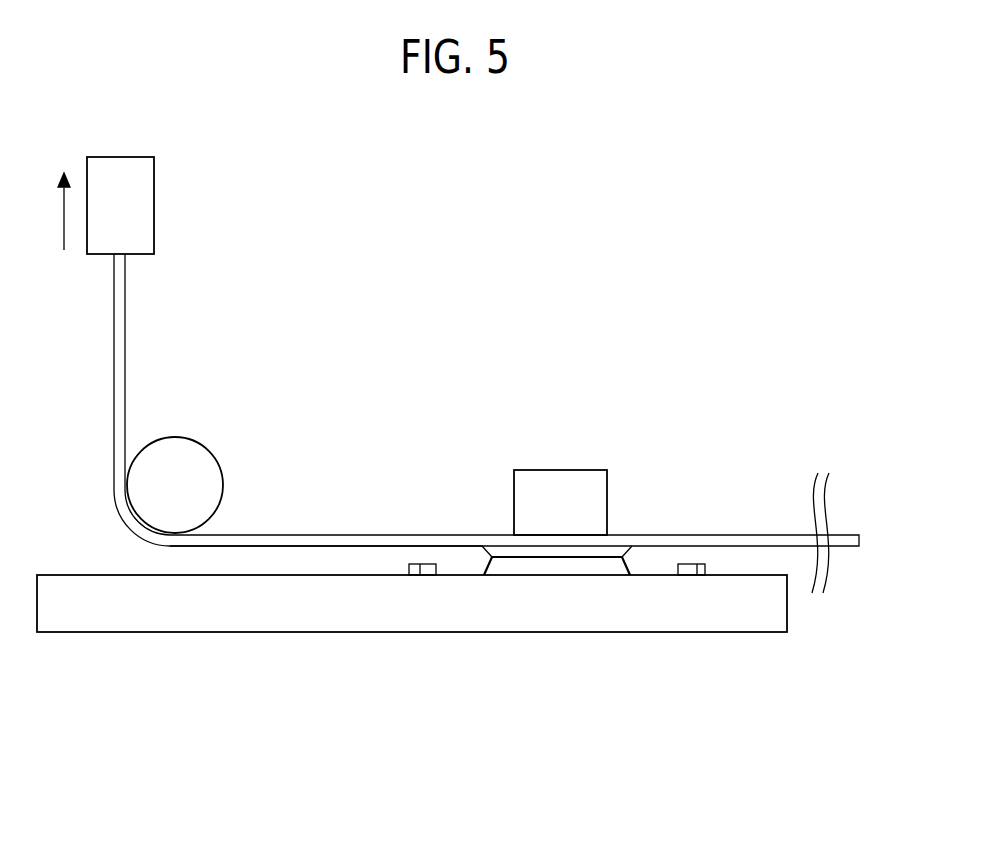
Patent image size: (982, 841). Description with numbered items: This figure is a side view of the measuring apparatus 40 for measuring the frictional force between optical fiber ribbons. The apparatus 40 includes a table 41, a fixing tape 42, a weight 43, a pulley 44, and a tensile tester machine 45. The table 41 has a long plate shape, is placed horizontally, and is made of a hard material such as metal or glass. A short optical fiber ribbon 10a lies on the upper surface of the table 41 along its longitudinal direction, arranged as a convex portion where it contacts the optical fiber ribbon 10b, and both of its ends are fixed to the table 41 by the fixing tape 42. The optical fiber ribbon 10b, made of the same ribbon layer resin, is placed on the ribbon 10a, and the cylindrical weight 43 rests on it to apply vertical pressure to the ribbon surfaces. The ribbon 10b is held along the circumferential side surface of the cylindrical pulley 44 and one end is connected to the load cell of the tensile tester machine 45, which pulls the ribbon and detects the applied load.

The measuring apparatus 40 is at (843, 146).
The table 41 is at (385, 632).
The fixing tape 42 is at (426, 576).
The optical fiber ribbon 10a is at (556, 558).
The optical fiber ribbon 10b is at (724, 535).
The weight 43 is at (558, 469).
The pulley 44 is at (200, 440).
The tensile tester machine 45 is at (154, 210).